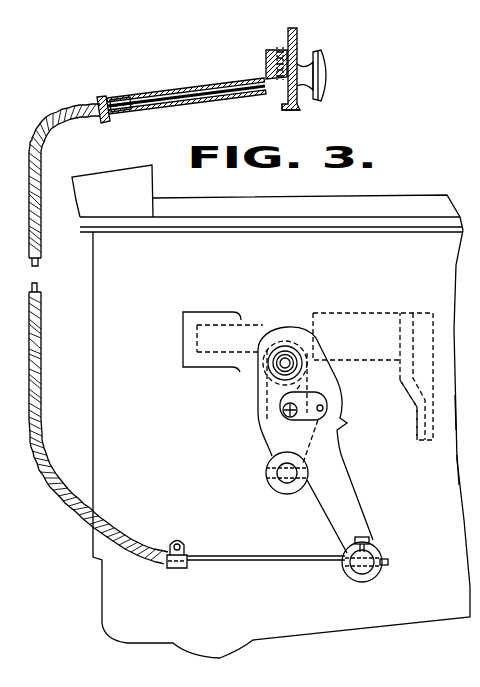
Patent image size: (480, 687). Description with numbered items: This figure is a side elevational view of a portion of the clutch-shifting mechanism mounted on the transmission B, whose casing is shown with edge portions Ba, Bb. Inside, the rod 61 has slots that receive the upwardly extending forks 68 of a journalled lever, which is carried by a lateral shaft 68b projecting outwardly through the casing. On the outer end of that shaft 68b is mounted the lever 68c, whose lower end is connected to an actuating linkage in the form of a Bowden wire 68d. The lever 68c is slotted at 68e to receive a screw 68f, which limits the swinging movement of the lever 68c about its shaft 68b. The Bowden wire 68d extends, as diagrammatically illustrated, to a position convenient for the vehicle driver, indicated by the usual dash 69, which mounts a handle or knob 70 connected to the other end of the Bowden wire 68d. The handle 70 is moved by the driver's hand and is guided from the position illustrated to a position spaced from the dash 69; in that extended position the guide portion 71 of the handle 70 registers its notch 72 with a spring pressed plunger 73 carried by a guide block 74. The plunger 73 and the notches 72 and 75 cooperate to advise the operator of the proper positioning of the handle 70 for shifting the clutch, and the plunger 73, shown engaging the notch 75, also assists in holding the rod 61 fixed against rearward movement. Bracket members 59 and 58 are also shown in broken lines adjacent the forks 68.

The transmission B is at (318, 202).
The body edge portion Ba is at (466, 412).
The body edge portion Bb is at (467, 470).
The guide portion 71 is at (188, 72).
The notch 72 is at (131, 100).
The spring pressed plunger 73 is at (265, 73).
The guide block 74 is at (282, 48).
The dash 69 is at (296, 42).
The handle 70 is at (330, 72).
The notch 75 is at (283, 100).
The rod 61 is at (250, 323).
The bracket 59 is at (367, 297).
The bracket lip 58 is at (400, 383).
The forks 68 is at (275, 326).
The lever 68c is at (336, 469).
The slot 68e is at (338, 425).
The screw 68f is at (282, 411).
The lateral shaft 68b is at (287, 473).
The Bowden wire 68d is at (270, 538).